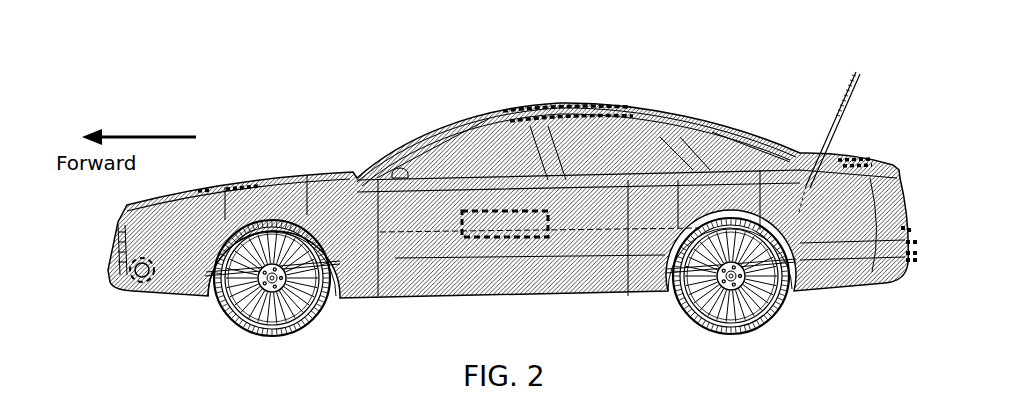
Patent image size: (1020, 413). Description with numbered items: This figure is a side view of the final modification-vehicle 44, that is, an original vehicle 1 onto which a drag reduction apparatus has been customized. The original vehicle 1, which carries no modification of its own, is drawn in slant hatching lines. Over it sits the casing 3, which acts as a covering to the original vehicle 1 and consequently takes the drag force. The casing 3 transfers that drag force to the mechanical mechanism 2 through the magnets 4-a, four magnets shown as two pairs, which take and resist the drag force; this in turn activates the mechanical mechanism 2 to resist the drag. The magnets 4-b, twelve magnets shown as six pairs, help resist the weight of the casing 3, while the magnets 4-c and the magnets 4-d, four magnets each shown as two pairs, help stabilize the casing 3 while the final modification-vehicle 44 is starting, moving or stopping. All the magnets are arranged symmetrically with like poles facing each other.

The original vehicle 1 is at (827, 278).
The mechanical mechanism 2 is at (817, 138).
The casing 3 is at (470, 112).
The final modification-vehicle 44 is at (352, 98).
The magnets 4-a is at (133, 272).
The magnets 4-b is at (216, 186).
The magnets 4-c is at (922, 224).
The magnets 4-d is at (497, 228).